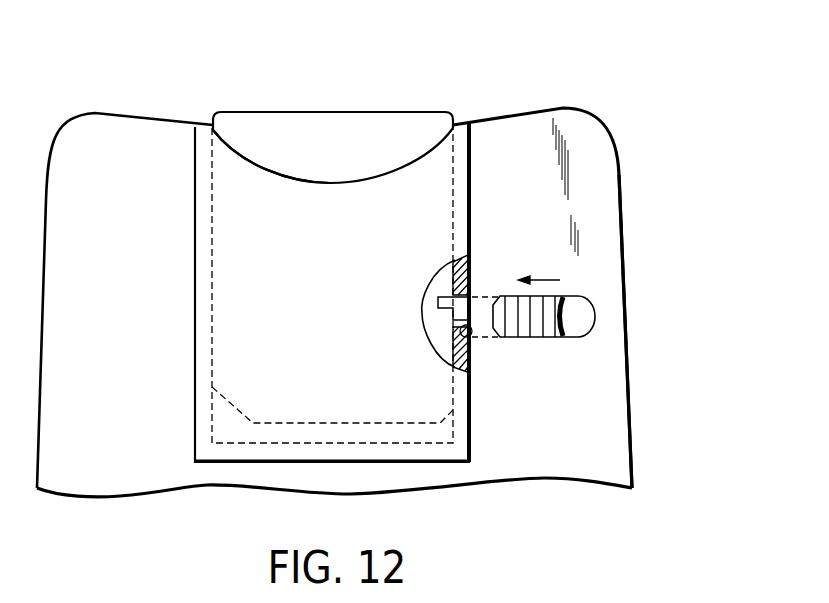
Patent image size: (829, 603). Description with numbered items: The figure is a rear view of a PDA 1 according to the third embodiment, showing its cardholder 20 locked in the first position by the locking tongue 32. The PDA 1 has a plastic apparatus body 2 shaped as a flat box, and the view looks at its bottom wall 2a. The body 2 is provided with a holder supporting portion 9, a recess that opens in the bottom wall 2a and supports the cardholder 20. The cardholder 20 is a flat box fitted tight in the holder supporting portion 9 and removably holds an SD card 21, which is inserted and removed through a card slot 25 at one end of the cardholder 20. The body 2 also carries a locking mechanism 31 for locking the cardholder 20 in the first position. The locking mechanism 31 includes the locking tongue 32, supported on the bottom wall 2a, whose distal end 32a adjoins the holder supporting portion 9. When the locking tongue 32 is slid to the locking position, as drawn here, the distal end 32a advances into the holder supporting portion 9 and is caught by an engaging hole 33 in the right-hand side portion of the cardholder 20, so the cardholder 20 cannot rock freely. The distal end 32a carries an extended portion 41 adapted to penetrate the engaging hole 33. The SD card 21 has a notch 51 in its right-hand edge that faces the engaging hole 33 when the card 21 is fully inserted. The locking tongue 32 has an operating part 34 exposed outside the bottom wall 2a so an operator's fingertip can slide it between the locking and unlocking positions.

The PDA 1 is at (609, 90).
The apparatus body 2 is at (95, 132).
The bottom wall 2a is at (613, 428).
The holder supporting portion 9 is at (470, 158).
The cardholder 20 is at (253, 263).
The SD card 21 is at (385, 122).
The card slot 25 is at (290, 180).
The locking mechanism 31 is at (588, 292).
The locking tongue 32 is at (483, 300).
The distal end 32a is at (457, 320).
The engaging hole 33 is at (468, 331).
The operating part 34 is at (557, 317).
The extended portion 41 is at (438, 302).
The notch 51 is at (448, 292).